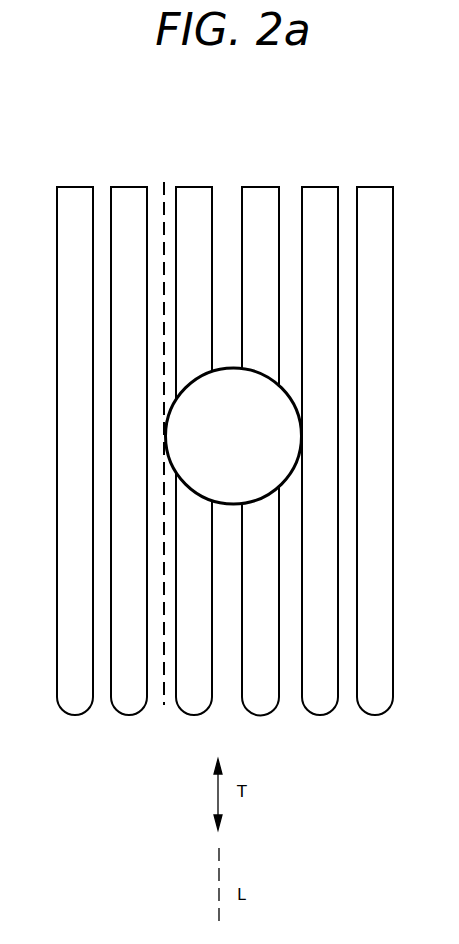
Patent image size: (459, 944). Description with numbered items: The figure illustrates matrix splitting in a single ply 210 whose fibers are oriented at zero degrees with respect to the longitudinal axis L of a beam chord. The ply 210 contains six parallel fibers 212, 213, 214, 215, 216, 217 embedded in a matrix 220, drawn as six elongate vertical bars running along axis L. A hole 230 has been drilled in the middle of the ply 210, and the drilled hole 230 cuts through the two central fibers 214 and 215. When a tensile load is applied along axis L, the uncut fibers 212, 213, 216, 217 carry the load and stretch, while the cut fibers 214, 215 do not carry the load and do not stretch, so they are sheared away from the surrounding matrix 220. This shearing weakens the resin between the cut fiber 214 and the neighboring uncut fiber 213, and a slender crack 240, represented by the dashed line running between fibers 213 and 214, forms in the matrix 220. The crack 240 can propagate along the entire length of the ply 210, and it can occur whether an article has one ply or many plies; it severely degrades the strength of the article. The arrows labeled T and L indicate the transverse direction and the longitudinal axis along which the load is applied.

The ply 210 is at (160, 773).
The fiber 212 is at (83, 187).
The fiber 213 is at (137, 187).
The fiber 214 is at (198, 187).
The fiber 215 is at (255, 187).
The fiber 216 is at (313, 187).
The fiber 217 is at (377, 187).
The matrix 220 is at (296, 710).
The hole 230 is at (234, 436).
The crack 240 is at (163, 700).